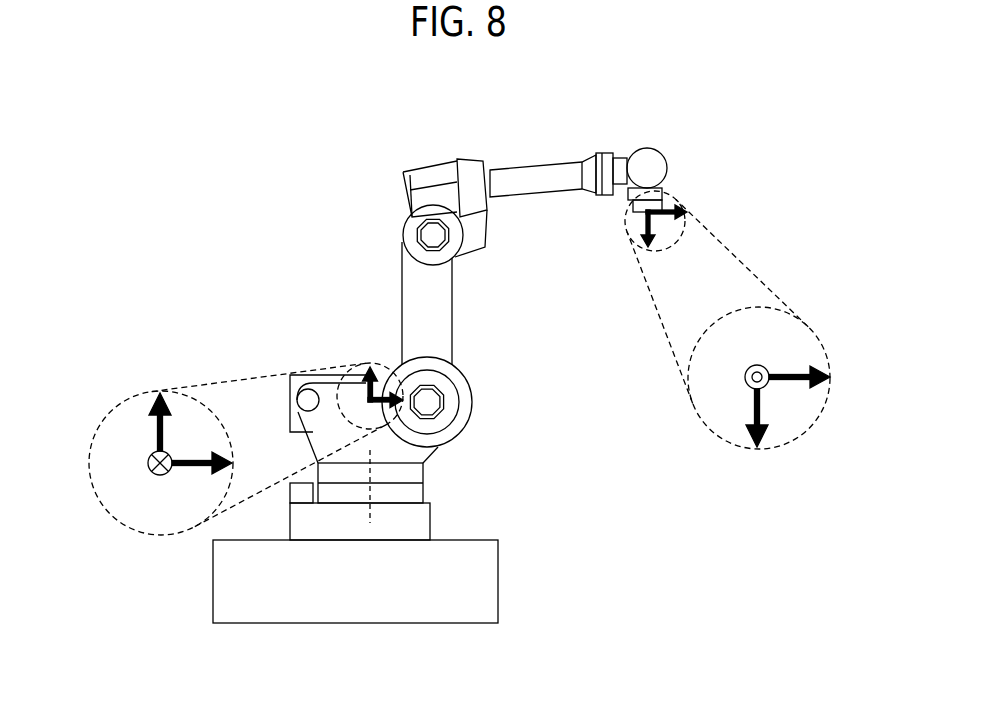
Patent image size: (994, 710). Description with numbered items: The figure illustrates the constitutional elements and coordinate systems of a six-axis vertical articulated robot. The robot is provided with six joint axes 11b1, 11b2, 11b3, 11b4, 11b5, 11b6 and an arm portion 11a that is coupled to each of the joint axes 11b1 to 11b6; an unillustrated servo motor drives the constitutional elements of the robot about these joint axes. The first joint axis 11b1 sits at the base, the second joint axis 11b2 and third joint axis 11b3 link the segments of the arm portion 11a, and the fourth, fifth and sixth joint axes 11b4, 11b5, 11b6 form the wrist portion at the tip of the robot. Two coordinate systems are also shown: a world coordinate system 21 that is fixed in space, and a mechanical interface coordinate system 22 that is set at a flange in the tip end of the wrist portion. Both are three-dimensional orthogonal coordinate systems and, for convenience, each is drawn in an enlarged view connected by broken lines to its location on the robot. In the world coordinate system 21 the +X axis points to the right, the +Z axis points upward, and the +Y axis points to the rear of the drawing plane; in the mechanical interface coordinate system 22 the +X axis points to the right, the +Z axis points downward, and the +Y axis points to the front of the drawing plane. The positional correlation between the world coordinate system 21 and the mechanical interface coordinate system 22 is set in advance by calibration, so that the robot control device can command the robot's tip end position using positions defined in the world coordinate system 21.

The arm portion 11a is at (528, 173).
The joint axis 11b1 is at (375, 476).
The joint axis 11b2 is at (453, 400).
The joint axis 11b3 is at (403, 237).
The joint axis 11b4 is at (598, 167).
The joint axis 11b5 is at (646, 168).
The joint axis 11b6 is at (668, 194).
The world coordinate system 21 is at (348, 368).
The mechanical interface coordinate system 22 is at (684, 244).